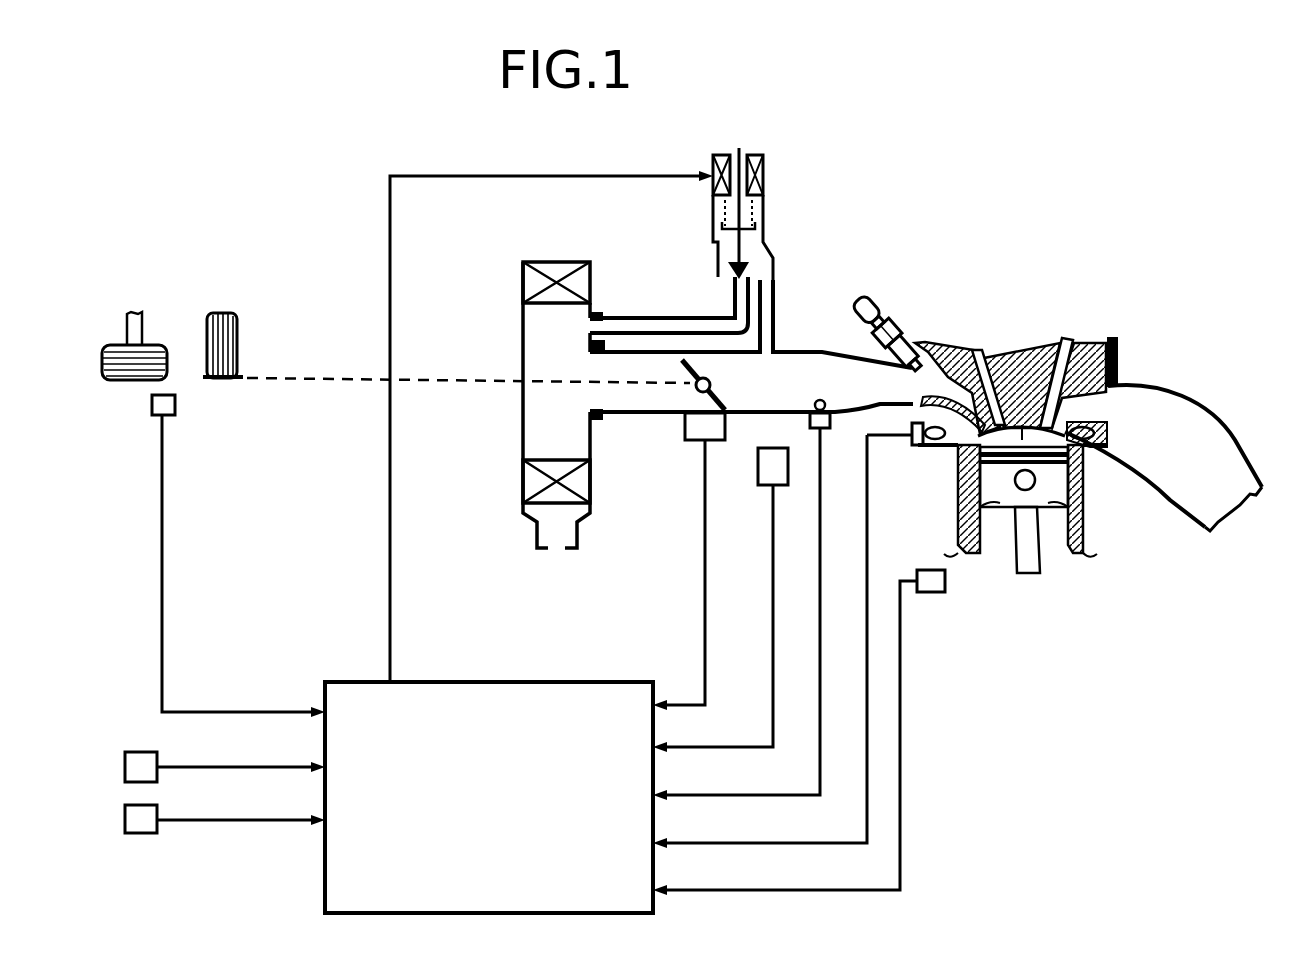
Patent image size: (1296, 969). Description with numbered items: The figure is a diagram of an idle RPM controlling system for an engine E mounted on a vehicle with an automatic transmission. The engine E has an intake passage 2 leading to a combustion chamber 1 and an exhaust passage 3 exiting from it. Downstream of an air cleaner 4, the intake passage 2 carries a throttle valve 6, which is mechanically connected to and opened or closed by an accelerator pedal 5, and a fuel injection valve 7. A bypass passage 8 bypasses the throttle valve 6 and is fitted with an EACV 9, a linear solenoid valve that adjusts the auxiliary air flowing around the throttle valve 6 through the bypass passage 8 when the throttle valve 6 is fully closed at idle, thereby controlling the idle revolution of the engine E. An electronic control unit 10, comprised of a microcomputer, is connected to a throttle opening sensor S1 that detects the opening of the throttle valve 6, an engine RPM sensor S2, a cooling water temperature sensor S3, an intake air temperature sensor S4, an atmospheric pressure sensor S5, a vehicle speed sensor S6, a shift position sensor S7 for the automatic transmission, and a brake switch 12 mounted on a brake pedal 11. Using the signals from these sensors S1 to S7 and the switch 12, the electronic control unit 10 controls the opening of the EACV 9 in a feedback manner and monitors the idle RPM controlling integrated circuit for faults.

The combustion chamber 1 is at (1033, 373).
The intake passage 2 is at (655, 400).
The exhaust passage 3 is at (1183, 470).
The air cleaner 4 is at (530, 287).
The accelerator pedal 5 is at (240, 342).
The throttle valve 6 is at (722, 393).
The fuel injection valve 7 is at (903, 333).
The bypass passage 8 is at (677, 322).
The EACV (Electronic Air Control Valve) 9 is at (769, 214).
The electronic control unit 10 is at (468, 819).
The brake pedal 11 is at (150, 350).
The brake switch 12 is at (175, 403).
The throttle opening sensor S1 is at (693, 428).
The engine RPM sensor S2 is at (930, 586).
The cooling water temperature sensor S3 is at (915, 447).
The intake air temperature sensor S4 is at (821, 430).
The atmospheric pressure sensor S5 is at (765, 474).
The vehicle speed sensor S6 is at (130, 767).
The shift position sensor S7 is at (130, 820).
The engine E is at (1016, 409).